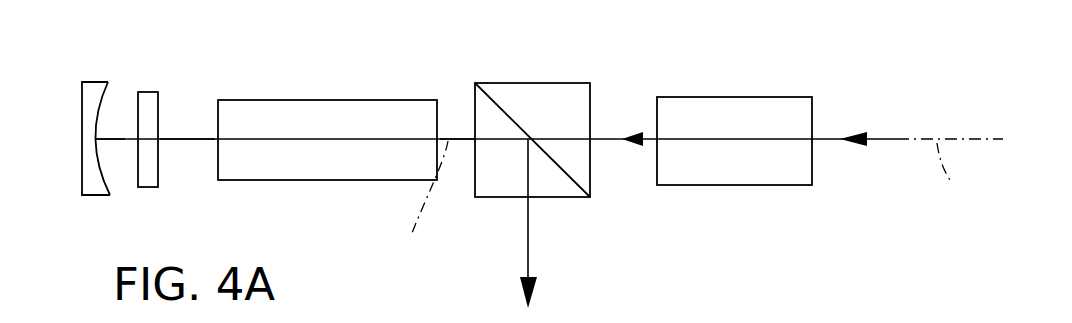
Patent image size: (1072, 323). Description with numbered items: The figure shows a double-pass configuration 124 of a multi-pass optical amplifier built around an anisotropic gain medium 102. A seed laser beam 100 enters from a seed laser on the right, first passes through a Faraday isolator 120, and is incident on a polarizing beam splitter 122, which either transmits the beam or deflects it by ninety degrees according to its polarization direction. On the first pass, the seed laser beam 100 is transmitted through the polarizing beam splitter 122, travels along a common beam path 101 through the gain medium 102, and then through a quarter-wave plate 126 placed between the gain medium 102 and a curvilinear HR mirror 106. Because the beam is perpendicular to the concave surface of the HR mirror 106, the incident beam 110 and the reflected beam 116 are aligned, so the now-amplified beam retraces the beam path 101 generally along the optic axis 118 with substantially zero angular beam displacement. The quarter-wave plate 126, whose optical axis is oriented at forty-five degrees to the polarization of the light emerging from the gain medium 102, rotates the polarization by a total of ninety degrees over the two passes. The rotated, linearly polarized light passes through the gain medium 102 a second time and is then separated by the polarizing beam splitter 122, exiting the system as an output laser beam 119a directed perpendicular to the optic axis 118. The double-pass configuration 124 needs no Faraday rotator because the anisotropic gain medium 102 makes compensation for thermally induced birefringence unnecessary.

The seed laser beam 100 is at (607, 139).
The common beam path 101 is at (462, 141).
The anisotropic gain medium 102 is at (283, 117).
The curvilinear HR mirror 106 is at (97, 95).
The incident beam 110 is at (112, 141).
The reflected beam 116 is at (177, 141).
The optic axis 118 is at (688, 204).
The output laser beam 119a is at (532, 240).
The Faraday isolator 120 is at (797, 175).
The polarizing beam splitter 122 is at (543, 110).
The double-pass configuration 124 is at (866, 36).
The quarter-wave plate 126 is at (152, 100).